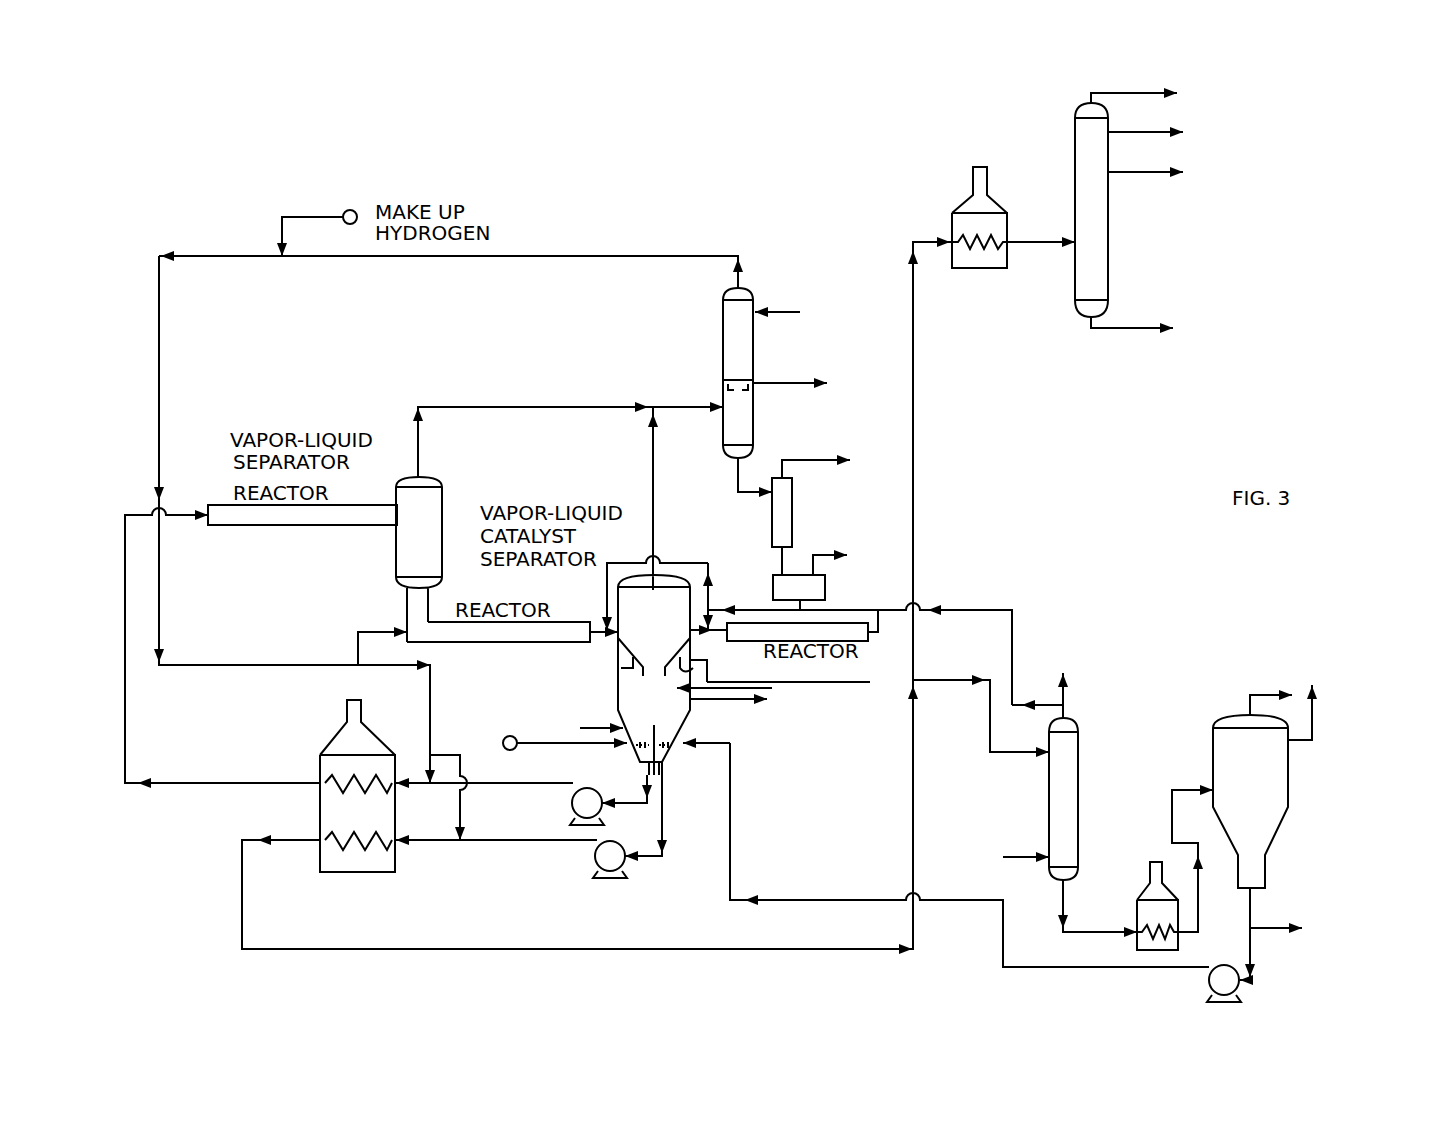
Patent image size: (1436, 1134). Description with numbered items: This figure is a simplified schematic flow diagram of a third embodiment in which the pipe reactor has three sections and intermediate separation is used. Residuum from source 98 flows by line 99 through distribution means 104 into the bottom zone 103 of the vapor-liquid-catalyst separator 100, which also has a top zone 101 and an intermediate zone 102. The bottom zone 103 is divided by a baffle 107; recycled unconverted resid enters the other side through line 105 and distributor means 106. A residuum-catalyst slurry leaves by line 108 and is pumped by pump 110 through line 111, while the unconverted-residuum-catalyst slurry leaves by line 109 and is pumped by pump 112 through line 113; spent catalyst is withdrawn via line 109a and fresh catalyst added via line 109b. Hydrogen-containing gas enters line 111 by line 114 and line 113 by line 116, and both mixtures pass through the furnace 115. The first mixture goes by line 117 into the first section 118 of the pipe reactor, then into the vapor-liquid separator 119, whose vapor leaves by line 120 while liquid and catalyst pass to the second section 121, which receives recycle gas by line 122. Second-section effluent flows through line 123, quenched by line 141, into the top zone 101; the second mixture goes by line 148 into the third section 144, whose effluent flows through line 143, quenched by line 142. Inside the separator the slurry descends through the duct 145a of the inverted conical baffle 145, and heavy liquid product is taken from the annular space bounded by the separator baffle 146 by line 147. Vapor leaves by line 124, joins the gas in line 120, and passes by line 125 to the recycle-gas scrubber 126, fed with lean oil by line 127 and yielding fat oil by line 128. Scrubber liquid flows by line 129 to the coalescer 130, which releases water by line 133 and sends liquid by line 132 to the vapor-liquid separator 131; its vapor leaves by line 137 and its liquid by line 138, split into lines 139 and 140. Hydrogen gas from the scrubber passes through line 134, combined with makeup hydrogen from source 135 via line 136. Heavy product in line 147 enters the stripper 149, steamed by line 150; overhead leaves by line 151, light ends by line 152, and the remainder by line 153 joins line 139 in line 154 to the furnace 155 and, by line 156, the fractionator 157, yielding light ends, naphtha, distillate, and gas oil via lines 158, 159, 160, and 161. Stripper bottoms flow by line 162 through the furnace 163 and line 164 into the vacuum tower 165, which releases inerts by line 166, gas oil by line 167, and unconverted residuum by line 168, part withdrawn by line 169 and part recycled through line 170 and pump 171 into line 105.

The source 98 is at (506, 749).
The line 99 is at (553, 748).
The vapor-liquid-catalyst separator 100 is at (617, 645).
The top zone 101 is at (706, 636).
The intermediate zone 102 is at (617, 668).
The bottom zone 103 is at (693, 712).
The distribution means 104 is at (654, 735).
The line 105 is at (735, 820).
The distributor means 106 is at (700, 738).
The baffle 107 is at (665, 752).
The line 108 is at (637, 772).
The line 109 is at (665, 816).
The line 109a is at (770, 707).
The line 109b is at (578, 727).
The pump 110 is at (590, 788).
The line 111 is at (415, 780).
The pump 112 is at (608, 873).
The line 113 is at (440, 843).
The line 114 is at (162, 326).
The furnace 115 is at (330, 738).
The line 116 is at (460, 806).
The line 117 is at (128, 727).
The first section 118 is at (303, 526).
The vapor-liquid separator 119 is at (445, 497).
The line 120 is at (486, 405).
The second section 121 is at (448, 645).
The line 122 is at (357, 642).
The line 123 is at (606, 625).
The line 124 is at (650, 470).
The line 125 is at (680, 408).
The recycle-gas scrubber 126 is at (722, 350).
The line 127 is at (786, 314).
The line 128 is at (790, 384).
The line 129 is at (736, 478).
The coalescer 130 is at (793, 510).
The vapor-liquid separator 131 is at (845, 568).
The line 132 is at (778, 556).
The line 133 is at (783, 460).
The line 134 is at (662, 256).
The source 135 is at (345, 211).
The line 136 is at (279, 234).
The line 137 is at (823, 554).
The line 138 is at (826, 597).
The line 139 is at (888, 608).
The line 140 is at (746, 608).
The line 141 is at (688, 562).
The line 142 is at (706, 622).
The line 143 is at (745, 642).
The third section 144 is at (852, 643).
The inverted conical baffle 145 is at (621, 688).
The duct 145a is at (712, 650).
The separator baffle 146 is at (612, 670).
The line 147 is at (845, 683).
The line 148 is at (240, 893).
The stripper 149 is at (1080, 802).
The line 150 is at (1025, 860).
The line 151 is at (1068, 712).
The line 152 is at (1066, 682).
The line 153 is at (1047, 700).
The line 154 is at (915, 385).
The furnace 155 is at (963, 203).
The line 156 is at (1028, 244).
The fractionator 157 is at (1073, 166).
The line 158 is at (1115, 94).
The line 159 is at (1130, 133).
The line 160 is at (1126, 173).
The line 161 is at (1130, 330).
The line 162 is at (1062, 900).
The furnace 163 is at (1148, 893).
The line 164 is at (1200, 880).
The vacuum tower 165 is at (1212, 757).
The line 166 is at (1262, 690).
The line 167 is at (1305, 742).
The line 168 is at (1252, 912).
The line 169 is at (1290, 925).
The line 170 is at (1252, 955).
The pump 171 is at (1222, 1003).